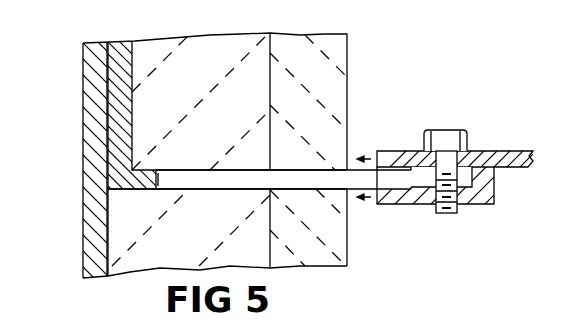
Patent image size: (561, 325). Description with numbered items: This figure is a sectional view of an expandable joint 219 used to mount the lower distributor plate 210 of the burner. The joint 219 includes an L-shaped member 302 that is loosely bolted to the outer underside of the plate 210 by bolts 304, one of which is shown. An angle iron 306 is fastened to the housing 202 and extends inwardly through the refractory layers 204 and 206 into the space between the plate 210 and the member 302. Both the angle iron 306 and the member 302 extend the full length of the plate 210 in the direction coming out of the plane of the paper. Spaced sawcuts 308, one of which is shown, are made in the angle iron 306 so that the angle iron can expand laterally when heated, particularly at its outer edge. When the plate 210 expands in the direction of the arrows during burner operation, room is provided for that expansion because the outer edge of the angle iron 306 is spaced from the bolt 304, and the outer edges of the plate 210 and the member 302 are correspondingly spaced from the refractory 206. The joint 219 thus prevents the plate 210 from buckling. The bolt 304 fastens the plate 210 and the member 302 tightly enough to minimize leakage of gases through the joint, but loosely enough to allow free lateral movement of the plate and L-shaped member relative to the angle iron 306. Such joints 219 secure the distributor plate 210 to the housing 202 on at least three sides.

The housing 202 is at (83, 143).
The refractory layer 204 is at (212, 110).
The refractory layer 206 is at (330, 247).
The lower distributor plate 210 is at (493, 152).
The expandable joint 219 is at (444, 226).
The L-shaped member 302 is at (494, 186).
The bolt 304 is at (438, 129).
The angle iron 306 is at (128, 62).
The sawcut 308 is at (243, 171).